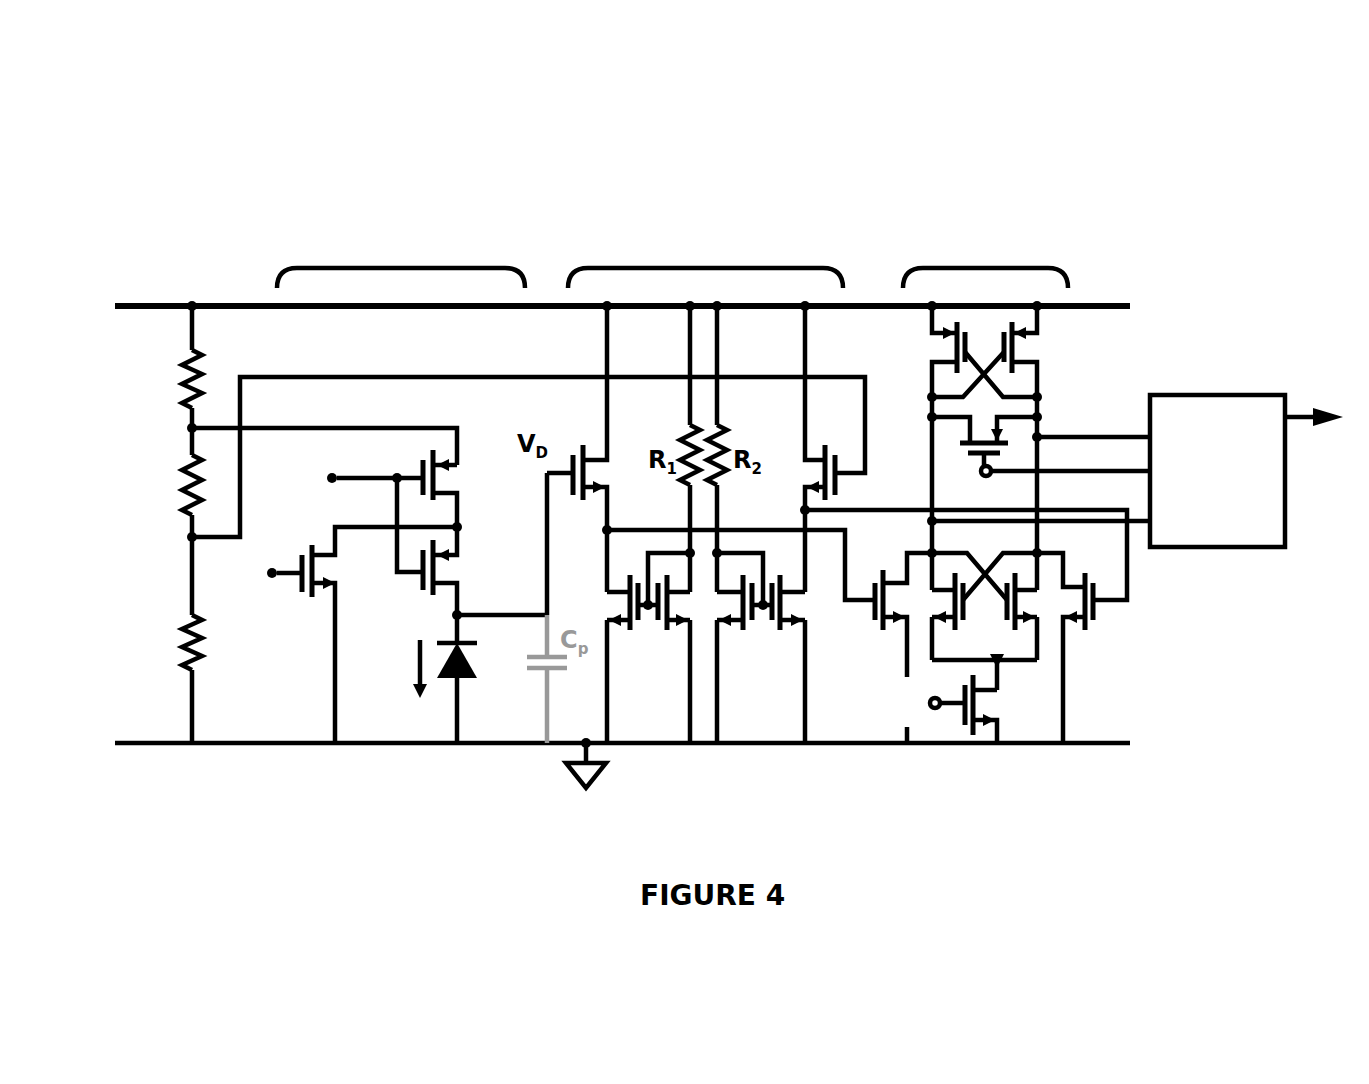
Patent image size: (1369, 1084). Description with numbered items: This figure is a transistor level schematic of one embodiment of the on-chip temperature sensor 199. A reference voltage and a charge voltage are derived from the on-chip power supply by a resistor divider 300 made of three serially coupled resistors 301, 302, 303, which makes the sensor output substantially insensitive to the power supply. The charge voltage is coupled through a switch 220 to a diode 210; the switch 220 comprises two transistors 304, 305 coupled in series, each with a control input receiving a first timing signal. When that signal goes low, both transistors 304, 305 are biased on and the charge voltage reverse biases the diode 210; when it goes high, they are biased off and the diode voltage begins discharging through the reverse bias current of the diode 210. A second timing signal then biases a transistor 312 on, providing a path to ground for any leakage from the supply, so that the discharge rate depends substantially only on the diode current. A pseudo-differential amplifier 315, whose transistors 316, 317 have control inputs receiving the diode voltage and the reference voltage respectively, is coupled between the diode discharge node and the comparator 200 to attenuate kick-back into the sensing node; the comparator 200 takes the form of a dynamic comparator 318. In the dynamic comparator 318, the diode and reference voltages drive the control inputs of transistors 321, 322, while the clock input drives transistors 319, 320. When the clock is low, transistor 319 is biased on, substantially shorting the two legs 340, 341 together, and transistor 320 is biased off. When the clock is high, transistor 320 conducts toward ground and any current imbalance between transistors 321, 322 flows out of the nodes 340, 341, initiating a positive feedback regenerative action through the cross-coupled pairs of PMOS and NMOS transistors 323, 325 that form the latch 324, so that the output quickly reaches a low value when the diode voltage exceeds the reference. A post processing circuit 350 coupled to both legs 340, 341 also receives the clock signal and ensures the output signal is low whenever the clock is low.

The on-chip temperature sensor 199 is at (150, 185).
The comparator 200 is at (1070, 215).
The switch 220 is at (497, 405).
The resistor divider 300 is at (197, 524).
The resistor 301 is at (200, 362).
The resistor 302 is at (200, 463).
The resistor 303 is at (200, 657).
The transistor 304 is at (468, 460).
The transistor 305 is at (468, 547).
The transistor 312 is at (333, 594).
The diode 210 is at (470, 676).
The pseudo-differential amplifier 315 is at (865, 218).
The transistor 316 is at (607, 460).
The transistor 317 is at (832, 457).
The dynamic comparator 318 is at (1275, 311).
The transistor 319 is at (994, 433).
The transistor 320 is at (970, 727).
The transistor 321 is at (875, 627).
The transistor 322 is at (1085, 627).
The cross-coupled transistor pair 323 is at (1022, 620).
The cross-coupled latch 324 is at (1030, 613).
The cross-coupled transistor pair 325 is at (1018, 353).
The leg 340 is at (930, 487).
The leg 341 is at (1037, 503).
The post processing circuit 350 is at (1190, 550).